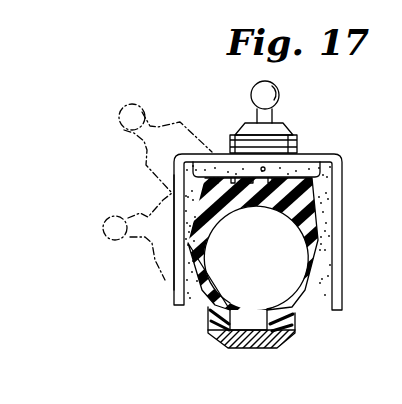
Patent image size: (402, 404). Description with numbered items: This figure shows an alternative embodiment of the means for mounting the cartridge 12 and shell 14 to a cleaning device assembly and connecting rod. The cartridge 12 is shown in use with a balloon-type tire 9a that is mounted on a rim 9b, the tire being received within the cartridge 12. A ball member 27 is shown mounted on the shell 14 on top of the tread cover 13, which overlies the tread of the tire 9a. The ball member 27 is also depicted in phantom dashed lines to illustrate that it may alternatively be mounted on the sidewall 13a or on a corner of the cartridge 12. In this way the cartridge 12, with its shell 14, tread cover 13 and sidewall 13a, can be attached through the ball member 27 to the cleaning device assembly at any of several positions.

The ball member 27 is at (273, 133).
The shell 14 is at (295, 155).
The tread cover 13 is at (338, 156).
The sidewall 13a is at (174, 197).
The cartridge 12 is at (332, 185).
The balloon-type tire 9a is at (205, 300).
The rim 9b is at (278, 346).